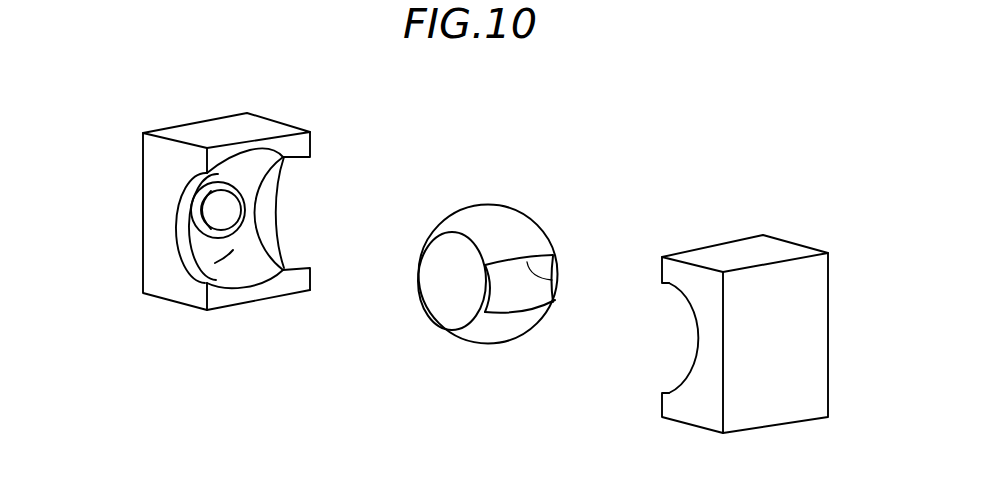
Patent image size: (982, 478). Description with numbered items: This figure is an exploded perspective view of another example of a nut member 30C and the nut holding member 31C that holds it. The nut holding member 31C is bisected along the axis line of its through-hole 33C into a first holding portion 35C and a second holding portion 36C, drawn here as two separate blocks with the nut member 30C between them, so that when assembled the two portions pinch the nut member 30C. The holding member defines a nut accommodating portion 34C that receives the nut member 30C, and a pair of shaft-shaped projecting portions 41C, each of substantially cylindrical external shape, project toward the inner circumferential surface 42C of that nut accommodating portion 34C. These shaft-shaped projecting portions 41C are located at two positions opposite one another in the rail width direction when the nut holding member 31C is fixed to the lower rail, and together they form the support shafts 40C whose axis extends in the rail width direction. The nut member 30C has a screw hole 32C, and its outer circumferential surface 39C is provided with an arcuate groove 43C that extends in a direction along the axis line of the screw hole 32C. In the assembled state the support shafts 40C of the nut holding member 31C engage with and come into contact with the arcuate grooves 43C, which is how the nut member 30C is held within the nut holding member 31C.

The nut holding member 31C is at (494, 295).
The first holding portion 35C is at (224, 311).
The second holding portion 36C is at (748, 432).
The through-hole 33C is at (190, 237).
The nut accommodating portion 34C is at (153, 238).
The inner circumferential surface 42C is at (203, 267).
The support shaft 40C is at (299, 209).
The shaft-shaped projecting portion 41C is at (227, 202).
The nut member 30C is at (477, 344).
The outer circumferential surface 39C is at (497, 218).
The arcuate groove 43C is at (420, 281).
The screw hole 32C is at (455, 234).